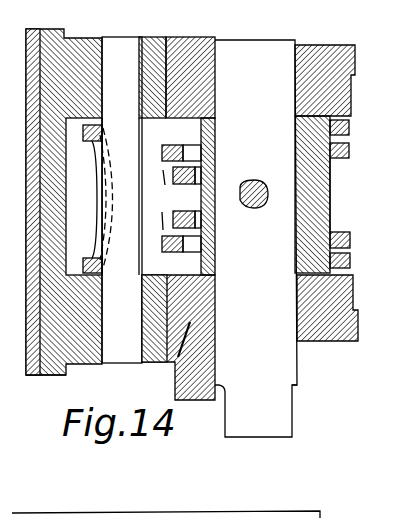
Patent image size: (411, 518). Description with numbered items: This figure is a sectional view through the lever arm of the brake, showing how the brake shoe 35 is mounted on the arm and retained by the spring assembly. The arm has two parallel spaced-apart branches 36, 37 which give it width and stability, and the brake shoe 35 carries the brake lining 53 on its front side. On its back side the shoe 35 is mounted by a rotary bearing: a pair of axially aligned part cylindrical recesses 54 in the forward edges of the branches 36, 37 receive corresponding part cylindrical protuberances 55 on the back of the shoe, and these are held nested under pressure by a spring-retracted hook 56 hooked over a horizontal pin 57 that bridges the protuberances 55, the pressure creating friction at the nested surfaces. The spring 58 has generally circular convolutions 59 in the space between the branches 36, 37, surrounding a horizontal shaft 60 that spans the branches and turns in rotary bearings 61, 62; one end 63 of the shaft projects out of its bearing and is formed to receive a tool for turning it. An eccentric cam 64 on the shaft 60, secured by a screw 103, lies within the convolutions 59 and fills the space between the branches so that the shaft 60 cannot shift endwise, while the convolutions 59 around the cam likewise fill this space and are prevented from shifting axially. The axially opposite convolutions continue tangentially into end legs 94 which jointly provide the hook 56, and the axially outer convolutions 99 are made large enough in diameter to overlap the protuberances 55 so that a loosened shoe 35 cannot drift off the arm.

The brake shoe 35 is at (55, 367).
The arm branch 36 is at (197, 65).
The arm branch 37 is at (168, 372).
The brake lining 53 is at (32, 375).
The part cylindrical recess 54 is at (163, 52).
The part cylindrical protuberance 55 is at (92, 45).
The hook 56 is at (110, 208).
The horizontal pin 57 is at (123, 357).
The spring 58 is at (180, 212).
The spring convolution 59 is at (349, 127).
The shaft 60 is at (256, 238).
The rotary bearing 61 is at (291, 63).
The rotary bearing 62 is at (298, 340).
The projecting shaft end 63 is at (299, 381).
The eccentric cam 64 is at (327, 193).
The end leg 94 is at (84, 141).
The axially outer spring convolution 99 is at (342, 158).
The screw 103 is at (252, 208).